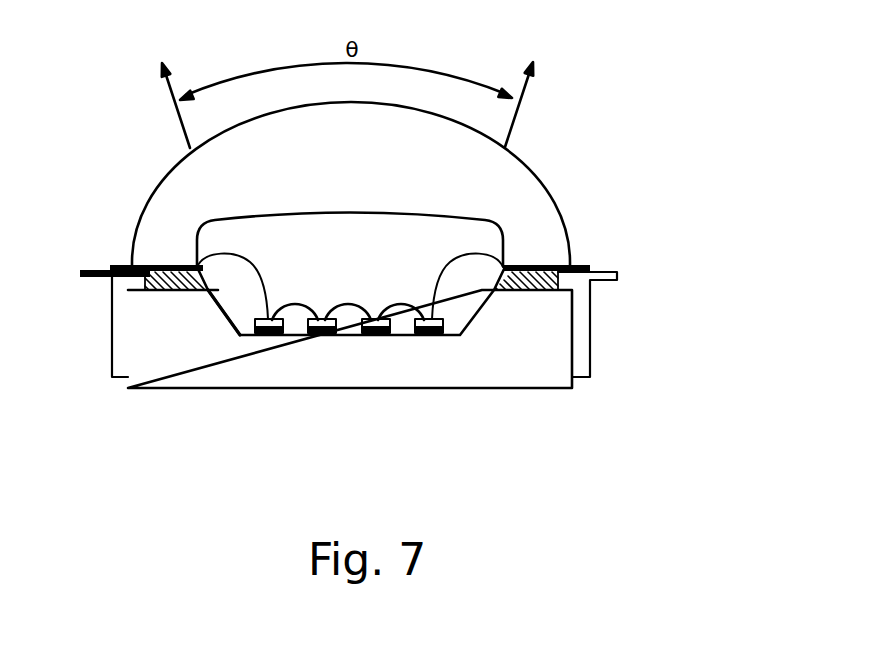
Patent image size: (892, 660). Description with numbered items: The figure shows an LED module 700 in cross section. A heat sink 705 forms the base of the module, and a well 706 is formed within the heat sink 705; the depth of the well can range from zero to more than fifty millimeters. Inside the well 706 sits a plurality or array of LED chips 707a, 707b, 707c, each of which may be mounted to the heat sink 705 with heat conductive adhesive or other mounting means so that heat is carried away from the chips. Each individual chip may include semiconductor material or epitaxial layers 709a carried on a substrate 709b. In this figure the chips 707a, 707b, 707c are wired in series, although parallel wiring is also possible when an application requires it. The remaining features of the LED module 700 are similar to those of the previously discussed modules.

The LED module 700 is at (640, 115).
The heat sink 705 is at (528, 337).
The well 706 is at (480, 303).
The LED chip 707a is at (253, 333).
The LED chip 707b is at (313, 333).
The LED chip 707c is at (433, 333).
The epitaxial layers 709a is at (372, 333).
The substrate 709b is at (374, 333).